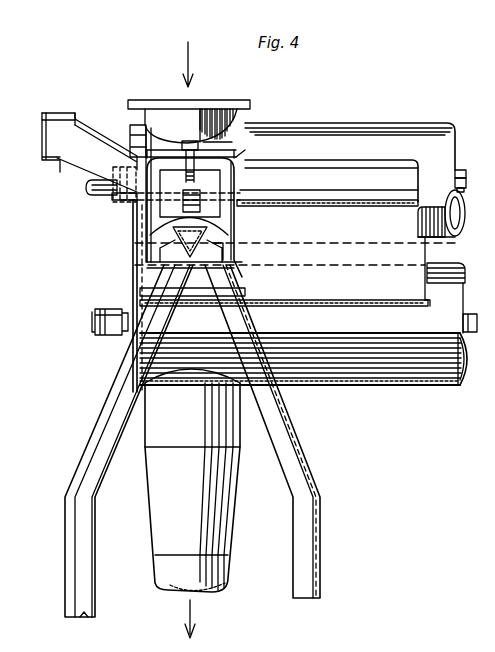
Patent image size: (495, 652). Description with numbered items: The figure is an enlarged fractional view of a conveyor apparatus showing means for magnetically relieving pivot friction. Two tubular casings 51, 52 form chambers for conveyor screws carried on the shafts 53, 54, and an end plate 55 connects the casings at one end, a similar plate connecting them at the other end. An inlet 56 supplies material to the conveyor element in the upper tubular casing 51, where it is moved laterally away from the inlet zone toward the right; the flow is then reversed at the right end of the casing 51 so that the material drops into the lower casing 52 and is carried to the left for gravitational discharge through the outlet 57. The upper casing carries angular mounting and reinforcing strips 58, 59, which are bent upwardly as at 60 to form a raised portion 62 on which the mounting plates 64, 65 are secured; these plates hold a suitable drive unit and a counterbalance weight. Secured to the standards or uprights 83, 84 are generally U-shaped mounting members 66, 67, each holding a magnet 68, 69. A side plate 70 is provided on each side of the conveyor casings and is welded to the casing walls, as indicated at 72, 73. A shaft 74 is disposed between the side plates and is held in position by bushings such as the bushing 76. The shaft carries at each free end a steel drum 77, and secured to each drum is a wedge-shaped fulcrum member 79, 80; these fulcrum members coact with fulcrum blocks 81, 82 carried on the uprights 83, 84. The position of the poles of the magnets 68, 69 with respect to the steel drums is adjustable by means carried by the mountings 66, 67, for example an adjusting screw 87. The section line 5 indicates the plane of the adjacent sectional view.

The section line 5 is at (64, 642).
The tubular casing 51 is at (398, 130).
The tubular casing 52 is at (412, 373).
The shaft 53 is at (132, 200).
The shaft 54 is at (118, 334).
The end plate 55 is at (192, 218).
The inlet 56 is at (147, 117).
The outlet 57 is at (162, 432).
The angular mounting and reinforcing strip 58 is at (297, 168).
The angular mounting and reinforcing strip 59 is at (465, 172).
The upwardly bent portion 60 is at (84, 146).
The raised portion 62 is at (50, 130).
The mounting plate 64 is at (60, 113).
The mounting plate 65 is at (90, 186).
The U-shaped mounting member 66 is at (243, 180).
The U-shaped mounting member 67 is at (463, 185).
The magnet 68 is at (160, 203).
The magnet 69 is at (460, 205).
The side plate 70 is at (366, 288).
The weld 72 is at (333, 202).
The weld 73 is at (330, 305).
The shaft 74 is at (142, 292).
The bushing 76 is at (490, 267).
The steel drum 77 is at (200, 255).
The wedge-shaped fulcrum member 79 is at (190, 240).
The wedge-shaped fulcrum member 80 is at (457, 225).
The fulcrum block 81 is at (174, 268).
The fulcrum block 82 is at (490, 247).
The upright 83 is at (98, 436).
The upright 84 is at (488, 434).
The adjusting screw 87 is at (201, 113).